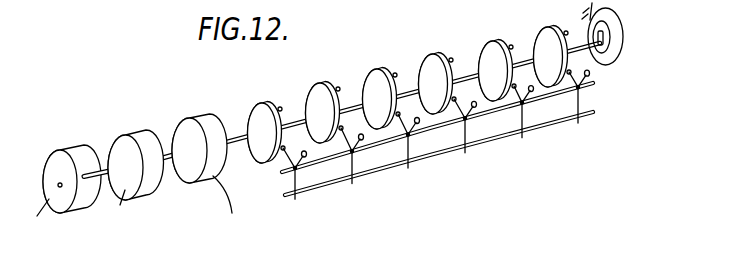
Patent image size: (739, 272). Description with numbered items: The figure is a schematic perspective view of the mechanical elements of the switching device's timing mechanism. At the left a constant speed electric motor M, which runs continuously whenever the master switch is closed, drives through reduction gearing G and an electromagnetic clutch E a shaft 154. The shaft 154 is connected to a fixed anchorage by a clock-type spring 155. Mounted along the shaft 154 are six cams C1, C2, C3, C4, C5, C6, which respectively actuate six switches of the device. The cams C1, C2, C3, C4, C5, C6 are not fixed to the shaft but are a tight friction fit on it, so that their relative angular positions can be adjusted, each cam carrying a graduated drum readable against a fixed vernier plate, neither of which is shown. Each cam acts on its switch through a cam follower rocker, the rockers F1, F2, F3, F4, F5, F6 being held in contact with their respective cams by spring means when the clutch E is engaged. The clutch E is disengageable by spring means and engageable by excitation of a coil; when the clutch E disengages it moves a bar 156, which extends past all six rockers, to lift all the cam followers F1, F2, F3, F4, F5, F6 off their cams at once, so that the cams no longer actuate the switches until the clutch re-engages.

The electric motor M is at (60, 149).
The reduction gearing G is at (133, 134).
The electromagnetic clutch E is at (197, 120).
The shaft 154 is at (241, 131).
The cam C1 is at (270, 103).
The cam C2 is at (327, 84).
The cam C3 is at (388, 70).
The cam C4 is at (437, 55).
The cam C5 is at (483, 42).
The cam C6 is at (535, 29).
The cam follower rocker F1 is at (292, 181).
The cam follower rocker F2 is at (350, 172).
The cam follower rocker F3 is at (406, 158).
The cam follower rocker F4 is at (463, 136).
The cam follower rocker F5 is at (521, 128).
The cam follower rocker F6 is at (580, 112).
The clock-type spring 155 is at (603, 67).
The bar 156 is at (593, 113).